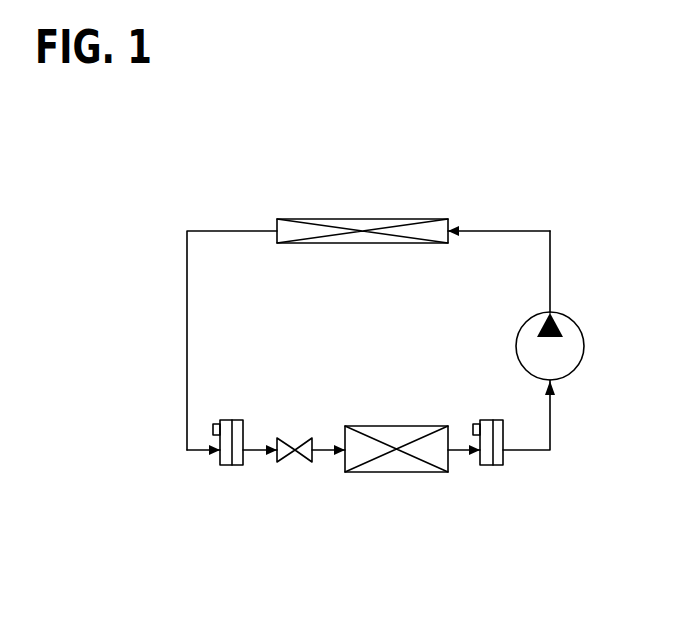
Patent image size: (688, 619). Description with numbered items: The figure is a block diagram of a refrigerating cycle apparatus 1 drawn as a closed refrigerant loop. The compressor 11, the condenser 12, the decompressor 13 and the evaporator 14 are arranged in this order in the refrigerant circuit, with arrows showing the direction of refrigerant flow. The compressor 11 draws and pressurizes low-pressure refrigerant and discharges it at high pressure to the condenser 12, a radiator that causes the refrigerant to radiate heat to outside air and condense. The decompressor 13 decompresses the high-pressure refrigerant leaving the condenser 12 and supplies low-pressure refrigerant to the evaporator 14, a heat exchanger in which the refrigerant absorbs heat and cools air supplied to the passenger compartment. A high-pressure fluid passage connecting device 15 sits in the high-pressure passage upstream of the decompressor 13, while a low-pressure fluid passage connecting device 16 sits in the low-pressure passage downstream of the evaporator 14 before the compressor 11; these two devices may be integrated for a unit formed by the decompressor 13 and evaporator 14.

The refrigerating cycle apparatus 1 is at (567, 213).
The compressor 11 is at (572, 318).
The condenser 12 is at (380, 219).
The decompressor 13 is at (302, 458).
The evaporator 14 is at (415, 473).
The high-pressure fluid passage connecting device 15 is at (227, 467).
The low-pressure fluid passage connecting device 16 is at (488, 467).